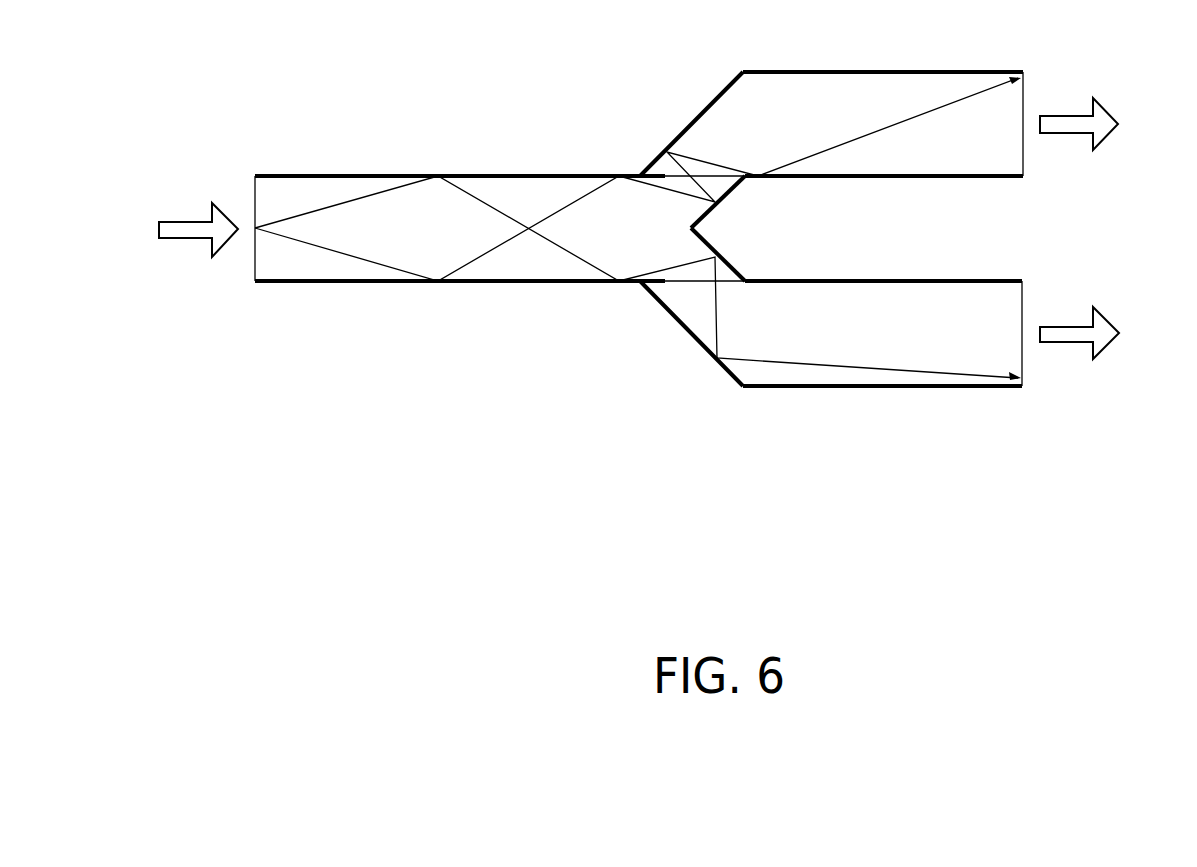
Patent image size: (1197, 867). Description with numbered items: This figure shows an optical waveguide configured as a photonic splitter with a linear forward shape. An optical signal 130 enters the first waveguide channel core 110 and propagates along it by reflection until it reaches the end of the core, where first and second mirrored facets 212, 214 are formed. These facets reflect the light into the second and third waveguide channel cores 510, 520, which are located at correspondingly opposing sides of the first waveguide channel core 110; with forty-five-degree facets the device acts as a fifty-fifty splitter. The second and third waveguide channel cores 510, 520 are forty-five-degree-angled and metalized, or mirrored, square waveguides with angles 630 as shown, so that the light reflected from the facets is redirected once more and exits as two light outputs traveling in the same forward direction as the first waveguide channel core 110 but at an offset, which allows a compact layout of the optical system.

The first waveguide channel core 110 is at (350, 168).
The second waveguide channel core 510 is at (867, 63).
The third waveguide channel core 520 is at (867, 395).
The angles 630 is at (691, 123).
The first mirrored facet 212 is at (722, 203).
The second mirrored facet 214 is at (722, 255).
The optical signal 130 is at (649, 267).